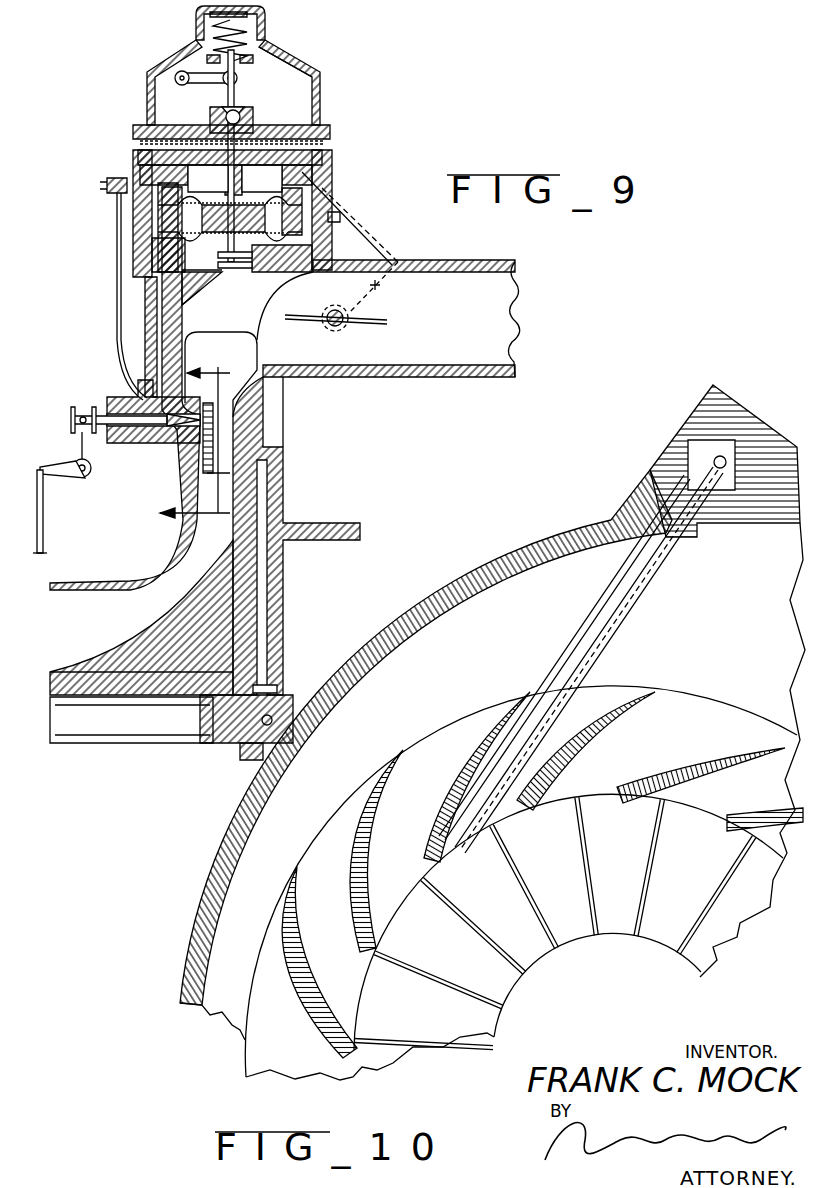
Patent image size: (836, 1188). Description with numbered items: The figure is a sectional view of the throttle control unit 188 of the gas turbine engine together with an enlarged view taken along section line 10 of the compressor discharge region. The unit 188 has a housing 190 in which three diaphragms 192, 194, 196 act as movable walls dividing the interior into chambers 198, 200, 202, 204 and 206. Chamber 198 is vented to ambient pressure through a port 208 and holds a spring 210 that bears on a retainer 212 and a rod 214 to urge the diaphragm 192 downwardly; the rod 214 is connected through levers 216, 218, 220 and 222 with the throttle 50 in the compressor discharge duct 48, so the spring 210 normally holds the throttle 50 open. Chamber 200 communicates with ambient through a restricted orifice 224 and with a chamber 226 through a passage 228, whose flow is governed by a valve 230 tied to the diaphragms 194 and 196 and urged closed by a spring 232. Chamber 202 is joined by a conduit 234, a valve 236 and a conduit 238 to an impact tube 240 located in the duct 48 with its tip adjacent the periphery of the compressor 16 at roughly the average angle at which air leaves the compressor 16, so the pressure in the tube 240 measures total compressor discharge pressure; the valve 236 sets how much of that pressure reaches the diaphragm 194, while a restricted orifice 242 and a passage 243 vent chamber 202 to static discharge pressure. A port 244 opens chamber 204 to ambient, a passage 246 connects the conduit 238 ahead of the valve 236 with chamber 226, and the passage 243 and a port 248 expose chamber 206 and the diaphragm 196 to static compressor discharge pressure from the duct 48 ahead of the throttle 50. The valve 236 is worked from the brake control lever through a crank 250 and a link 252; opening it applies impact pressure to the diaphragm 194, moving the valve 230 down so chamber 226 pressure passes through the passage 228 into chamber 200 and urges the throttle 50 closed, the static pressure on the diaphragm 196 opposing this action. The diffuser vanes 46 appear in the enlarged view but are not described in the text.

In FIG. 9, the section line 10 is at (195, 443).
In FIG. 10, the compressor 16 is at (565, 925).
In FIG. 10, the diffuser vanes 46 is at (652, 754).
In FIG. 9, the compressor discharge duct 48 is at (416, 317).
In FIG. 10, the compressor discharge duct 48 is at (724, 660).
In FIG. 9, the throttle 50 is at (370, 322).
In FIG. 9, the throttle control unit 188 is at (107, 101).
In FIG. 9, the housing 190 is at (327, 203).
In FIG. 9, the diaphragm 192 is at (327, 112).
In FIG. 9, the diaphragm 194 is at (200, 278).
In FIG. 9, the diaphragm 196 is at (200, 293).
In FIG. 9, the chamber 198 is at (157, 95).
In FIG. 9, the chamber 200 is at (157, 146).
In FIG. 9, the chamber 202 is at (127, 190).
In FIG. 9, the chamber 204 is at (187, 213).
In FIG. 9, the chamber 206 is at (180, 240).
In FIG. 9, the port 208 is at (313, 92).
In FIG. 9, the spring 210 is at (200, 22).
In FIG. 9, the retainer 212 is at (262, 62).
In FIG. 9, the rod 214 is at (253, 97).
In FIG. 9, the lever 216 is at (210, 82).
In FIG. 9, the lever 218 is at (200, 60).
In FIG. 9, the lever 220 is at (300, 173).
In FIG. 9, the lever 222 is at (432, 262).
In FIG. 9, the restricted orifice 224 is at (320, 173).
In FIG. 9, the chamber 226 is at (203, 133).
In FIG. 9, the passage 228 is at (247, 150).
In FIG. 9, the valve 230 is at (273, 145).
In FIG. 9, the spring 232 is at (220, 262).
In FIG. 9, the conduit 234 is at (153, 285).
In FIG. 9, the valve 236 is at (103, 412).
In FIG. 9, the conduit 238 is at (187, 437).
In FIG. 9, the impact tube 240 is at (220, 440).
In FIG. 10, the impact tube 240 is at (622, 603).
In FIG. 9, the restricted orifice 242 is at (293, 187).
In FIG. 9, the passage 243 is at (333, 245).
In FIG. 9, the port 244 is at (340, 220).
In FIG. 9, the passage 246 is at (117, 267).
In FIG. 9, the port 248 is at (297, 262).
In FIG. 9, the crank 250 is at (60, 472).
In FIG. 9, the link 252 is at (42, 533).